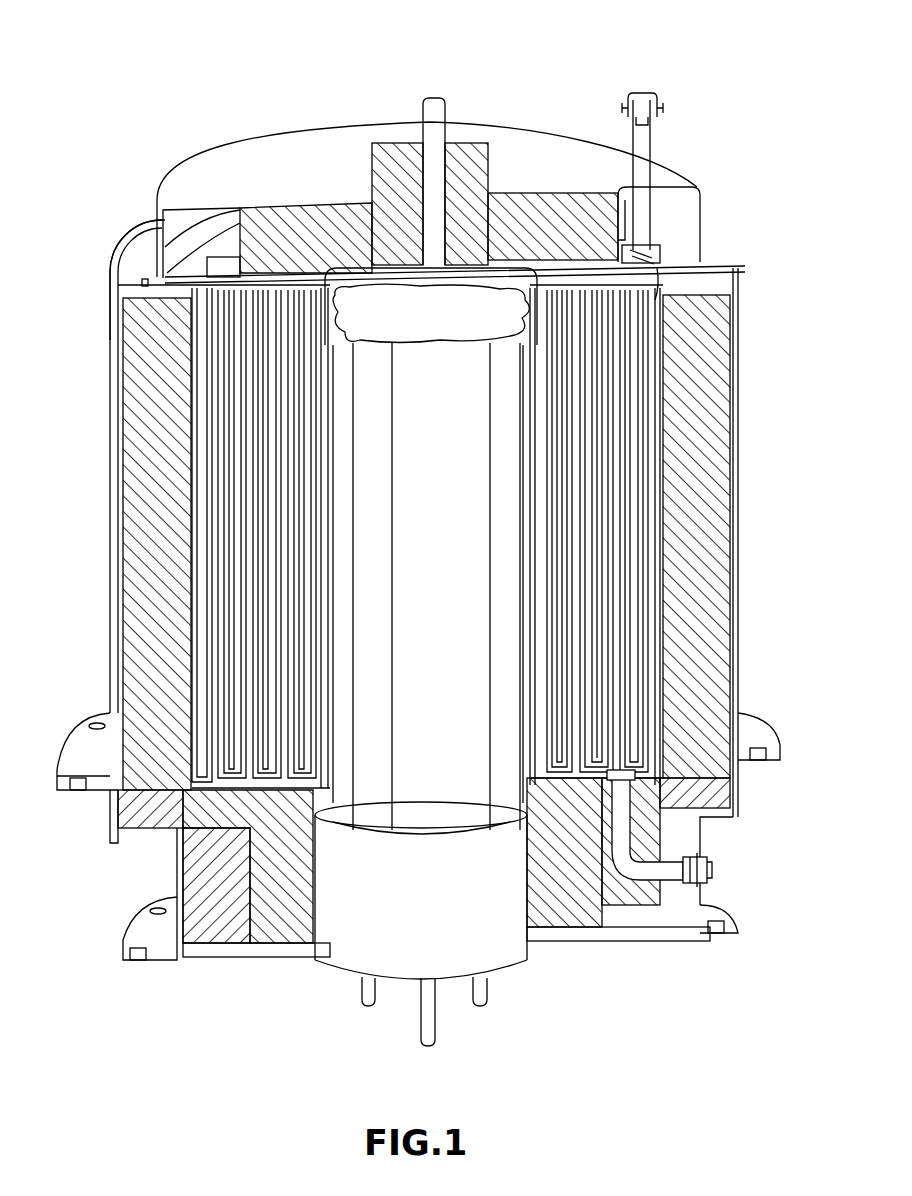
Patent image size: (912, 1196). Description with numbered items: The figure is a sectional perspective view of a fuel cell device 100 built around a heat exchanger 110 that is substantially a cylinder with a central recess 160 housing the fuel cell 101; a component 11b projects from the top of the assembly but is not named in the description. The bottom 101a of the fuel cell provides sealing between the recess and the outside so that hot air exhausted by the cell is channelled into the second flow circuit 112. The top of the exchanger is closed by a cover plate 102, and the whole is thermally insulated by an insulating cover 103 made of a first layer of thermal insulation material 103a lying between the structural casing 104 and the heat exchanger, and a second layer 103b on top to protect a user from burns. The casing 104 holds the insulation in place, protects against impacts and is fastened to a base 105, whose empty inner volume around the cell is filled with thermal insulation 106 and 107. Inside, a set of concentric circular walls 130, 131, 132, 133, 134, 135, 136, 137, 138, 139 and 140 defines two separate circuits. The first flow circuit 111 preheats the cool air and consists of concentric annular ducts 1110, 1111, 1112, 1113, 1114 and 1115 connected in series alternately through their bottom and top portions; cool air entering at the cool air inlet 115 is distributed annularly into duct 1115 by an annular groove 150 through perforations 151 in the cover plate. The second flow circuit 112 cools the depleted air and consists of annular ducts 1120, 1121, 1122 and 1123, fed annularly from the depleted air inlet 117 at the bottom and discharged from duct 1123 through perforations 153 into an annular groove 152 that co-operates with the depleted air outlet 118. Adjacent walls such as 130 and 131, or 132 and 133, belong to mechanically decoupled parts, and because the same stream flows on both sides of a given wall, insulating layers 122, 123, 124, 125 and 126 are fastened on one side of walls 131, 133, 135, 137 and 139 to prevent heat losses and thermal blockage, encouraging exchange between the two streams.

The fuel cell device 100 is at (545, 85).
The shaft 11b is at (435, 97).
The cool air inlet 115 is at (642, 93).
The insulating cover 103 is at (103, 181).
The first layer of thermal insulation material 103a is at (185, 243).
The second layer of thermal insulation material 103b is at (150, 345).
The cover plate 102 is at (332, 262).
The central recess 160 is at (492, 280).
The annular groove 150 is at (598, 245).
The perforations 151 is at (634, 246).
The first flow circuit 111 is at (697, 253).
The annular duct 1115 is at (660, 280).
The annular duct 1114 is at (657, 290).
The annular duct 1113 is at (638, 297).
The annular duct 1112 is at (612, 315).
The annular duct 1111 is at (595, 340).
The annular duct 1110 is at (547, 365).
The fuel cell 101 is at (436, 322).
The bottom of the fuel cell 101a is at (500, 948).
The annular duct 1120 is at (568, 392).
The annular duct 1121 is at (585, 418).
The annular duct 1122 is at (617, 438).
The annular duct 1123 is at (630, 462).
The insulating layer 126 is at (208, 482).
The insulating layer 125 is at (230, 514).
The insulating layer 124 is at (252, 547).
The insulating layer 123 is at (275, 586).
The insulating layer 122 is at (300, 630).
The heat exchanger 110 is at (180, 470).
The structural casing 104 is at (112, 562).
The circular wall 135 is at (593, 578).
The circular wall 134 is at (572, 612).
The circular wall 133 is at (568, 645).
The circular wall 132 is at (550, 678).
The circular wall 131 is at (540, 710).
The circular wall 130 is at (530, 743).
The circular wall 140 is at (662, 578).
The circular wall 139 is at (643, 610).
The circular wall 138 is at (637, 640).
The circular wall 137 is at (620, 667).
The circular wall 136 is at (613, 713).
The second flow circuit 112 is at (545, 770).
The depleted air inlet 117 is at (522, 808).
The perforations 153 is at (620, 792).
The annular groove 152 is at (643, 778).
The depleted air outlet 118 is at (707, 870).
The base 105 is at (178, 866).
The thermal insulation 106 is at (205, 930).
The thermal insulation 107 is at (272, 930).